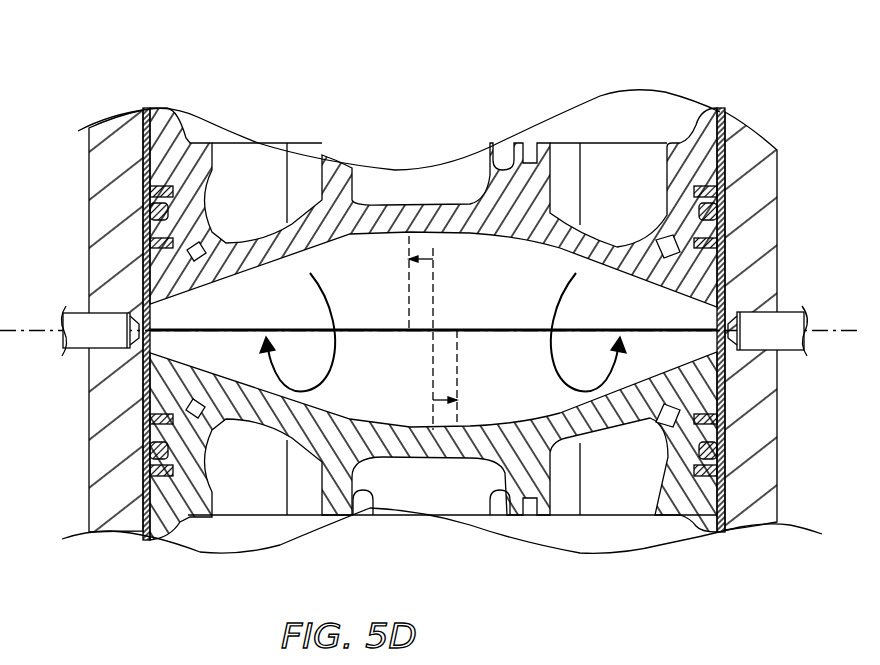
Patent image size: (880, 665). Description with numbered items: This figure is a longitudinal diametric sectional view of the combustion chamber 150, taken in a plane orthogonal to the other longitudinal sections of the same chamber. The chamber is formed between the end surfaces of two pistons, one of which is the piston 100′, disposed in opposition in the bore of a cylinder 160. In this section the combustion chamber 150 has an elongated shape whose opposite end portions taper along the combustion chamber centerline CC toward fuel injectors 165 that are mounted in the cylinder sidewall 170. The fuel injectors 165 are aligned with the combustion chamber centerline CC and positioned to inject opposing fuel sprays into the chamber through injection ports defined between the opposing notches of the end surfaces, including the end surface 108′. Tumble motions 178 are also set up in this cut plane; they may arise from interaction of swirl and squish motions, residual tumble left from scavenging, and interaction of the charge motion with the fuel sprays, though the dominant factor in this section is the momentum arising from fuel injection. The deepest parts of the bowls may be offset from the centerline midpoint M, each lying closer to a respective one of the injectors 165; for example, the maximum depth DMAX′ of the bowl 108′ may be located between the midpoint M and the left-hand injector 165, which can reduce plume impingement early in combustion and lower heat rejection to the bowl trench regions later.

The piston 100′ is at (700, 108).
The end surface 108′ is at (163, 308).
The combustion chamber 150 is at (530, 292).
The cylinder 160 is at (90, 502).
The fuel injector 165 is at (79, 316).
The cylinder sidewall 170 is at (119, 520).
The tumble motions 178 is at (338, 350).
The combustion chamber centerline CC is at (363, 328).
The centerline midpoint M is at (435, 330).
The maximum depth of the bowl DMAX′ is at (410, 232).